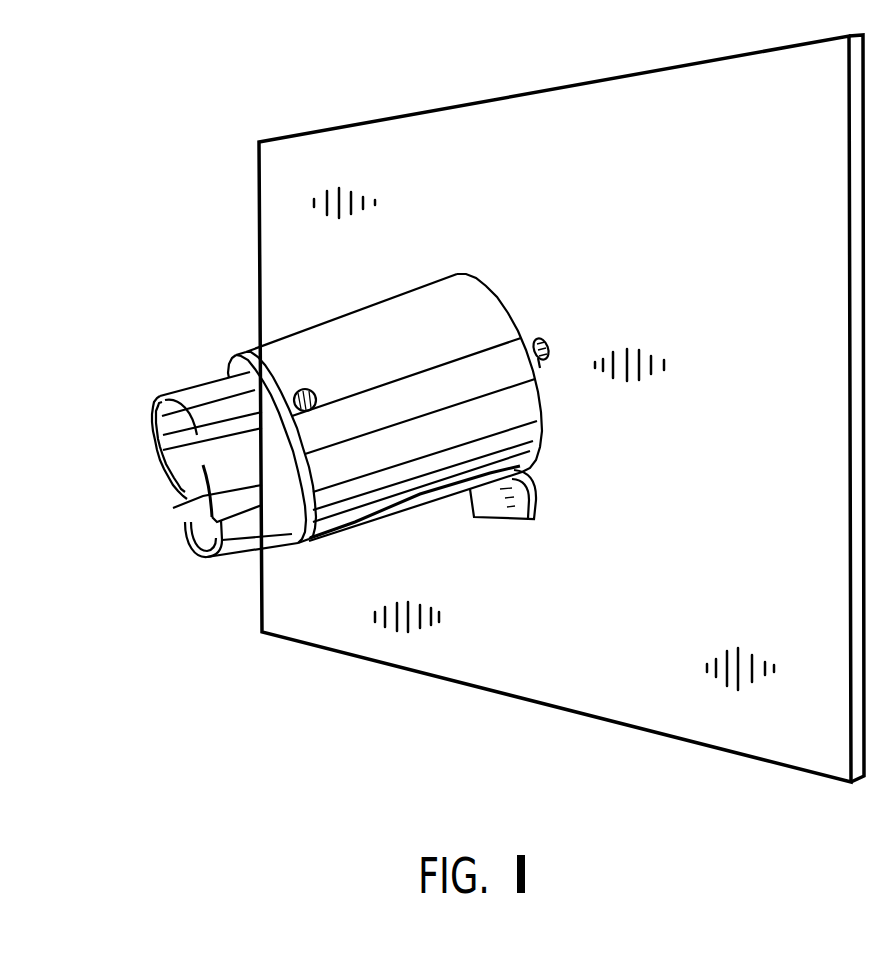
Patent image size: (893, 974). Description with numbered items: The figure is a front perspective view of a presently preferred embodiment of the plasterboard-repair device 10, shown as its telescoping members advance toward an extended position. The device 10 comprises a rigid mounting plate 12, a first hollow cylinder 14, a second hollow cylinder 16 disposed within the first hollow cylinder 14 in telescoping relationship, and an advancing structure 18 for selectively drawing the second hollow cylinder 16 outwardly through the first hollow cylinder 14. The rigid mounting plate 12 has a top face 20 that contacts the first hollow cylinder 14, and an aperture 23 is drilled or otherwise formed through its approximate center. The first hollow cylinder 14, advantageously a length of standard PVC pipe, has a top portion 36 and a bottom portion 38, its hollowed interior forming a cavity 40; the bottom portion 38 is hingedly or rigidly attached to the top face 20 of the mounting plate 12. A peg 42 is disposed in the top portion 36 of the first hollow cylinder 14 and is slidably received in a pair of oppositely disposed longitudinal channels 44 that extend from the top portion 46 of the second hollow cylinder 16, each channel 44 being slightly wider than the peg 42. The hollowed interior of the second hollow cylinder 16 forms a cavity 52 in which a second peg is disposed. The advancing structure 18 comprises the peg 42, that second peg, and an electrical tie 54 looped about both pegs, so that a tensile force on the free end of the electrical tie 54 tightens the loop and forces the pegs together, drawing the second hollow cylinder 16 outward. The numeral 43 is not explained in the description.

The device 10 is at (192, 290).
The rigid mounting plate 12 is at (500, 110).
The first hollow cylinder 14 is at (403, 297).
The second hollow cylinder 16 is at (212, 558).
The advancing structure 18 is at (254, 563).
The top face 20 is at (736, 316).
The aperture 23 is at (537, 344).
The top portion 36 is at (326, 568).
The bottom portion 38 is at (452, 270).
The cavity 40 is at (278, 565).
The peg 42 is at (300, 390).
The mounting bracket 43 is at (538, 499).
The longitudinal channels 44 is at (184, 460).
The top portion 46 is at (174, 380).
The cavity 52 is at (150, 480).
The electrical tie 54 is at (544, 366).